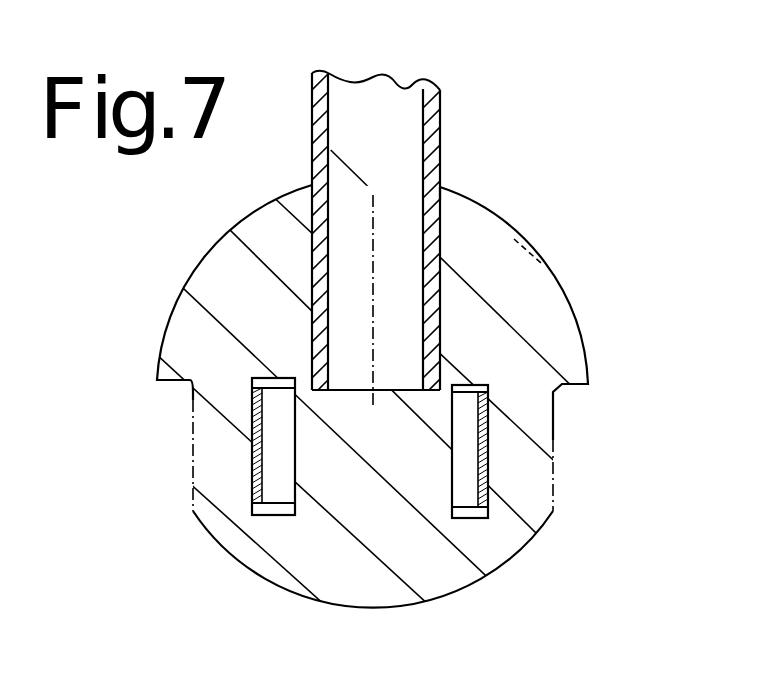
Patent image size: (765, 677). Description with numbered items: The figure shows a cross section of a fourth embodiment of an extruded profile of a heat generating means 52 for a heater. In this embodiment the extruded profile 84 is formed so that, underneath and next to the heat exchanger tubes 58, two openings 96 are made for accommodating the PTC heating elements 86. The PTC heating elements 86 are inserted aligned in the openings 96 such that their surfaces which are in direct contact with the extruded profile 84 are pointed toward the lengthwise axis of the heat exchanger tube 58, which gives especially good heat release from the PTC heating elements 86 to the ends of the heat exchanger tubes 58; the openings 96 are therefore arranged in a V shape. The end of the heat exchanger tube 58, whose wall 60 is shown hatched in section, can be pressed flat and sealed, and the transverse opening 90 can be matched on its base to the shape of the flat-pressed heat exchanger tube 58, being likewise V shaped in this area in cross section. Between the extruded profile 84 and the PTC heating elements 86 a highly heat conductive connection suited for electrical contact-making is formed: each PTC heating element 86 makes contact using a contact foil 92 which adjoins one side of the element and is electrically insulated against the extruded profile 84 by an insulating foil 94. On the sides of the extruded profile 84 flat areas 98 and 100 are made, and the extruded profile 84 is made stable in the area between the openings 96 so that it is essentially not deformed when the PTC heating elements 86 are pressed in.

The heat generating means 52 is at (166, 246).
The heat exchanger tube 58 is at (371, 217).
The tube wall 60 is at (313, 167).
The extruded profile 84 is at (560, 306).
The PTC heating element 86 is at (369, 411).
The transverse opening 90 is at (452, 178).
The contact foil 92 is at (252, 484).
The insulating foil 94 is at (252, 457).
The opening 96 is at (289, 372).
The flat area 98 is at (192, 458).
The flat area 100 is at (553, 440).